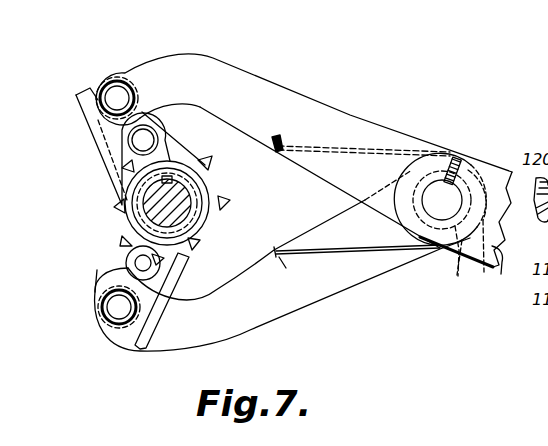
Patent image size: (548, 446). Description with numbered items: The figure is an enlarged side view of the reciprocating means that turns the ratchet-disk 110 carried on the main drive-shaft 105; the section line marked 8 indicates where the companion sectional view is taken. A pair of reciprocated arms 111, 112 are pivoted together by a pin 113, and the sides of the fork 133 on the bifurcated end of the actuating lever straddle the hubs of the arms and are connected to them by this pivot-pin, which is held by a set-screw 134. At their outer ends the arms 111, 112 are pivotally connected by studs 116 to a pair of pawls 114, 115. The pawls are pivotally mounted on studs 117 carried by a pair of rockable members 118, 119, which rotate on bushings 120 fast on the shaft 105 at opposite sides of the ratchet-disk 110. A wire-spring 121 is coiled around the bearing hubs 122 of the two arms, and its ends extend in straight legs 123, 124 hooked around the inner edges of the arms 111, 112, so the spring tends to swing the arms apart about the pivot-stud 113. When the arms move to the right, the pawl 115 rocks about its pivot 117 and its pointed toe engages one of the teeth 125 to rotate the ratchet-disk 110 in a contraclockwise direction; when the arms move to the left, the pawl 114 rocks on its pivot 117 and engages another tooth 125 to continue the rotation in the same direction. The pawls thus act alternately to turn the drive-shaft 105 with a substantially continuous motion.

The section line 8- 8 is at (102, 67).
The drive-shaft 105 is at (187, 210).
The ratchet-disk 110 is at (239, 197).
The arm 111 is at (284, 99).
The arm 112 is at (288, 303).
The pin 113 is at (443, 199).
The pawl 114 is at (100, 133).
The pawl 115 is at (175, 275).
The stud 116 is at (120, 97).
The stud 117 is at (146, 139).
The rockable member 118 is at (203, 152).
The rockable member 119 is at (135, 232).
The bushing 120 is at (147, 208).
The wire-spring 121 is at (484, 268).
The bearing hub 122 is at (454, 270).
The leg 123 is at (338, 154).
The leg 124 is at (381, 248).
The teeth 125 is at (196, 241).
The fork 133 is at (501, 276).
The set-screw 134 is at (454, 158).